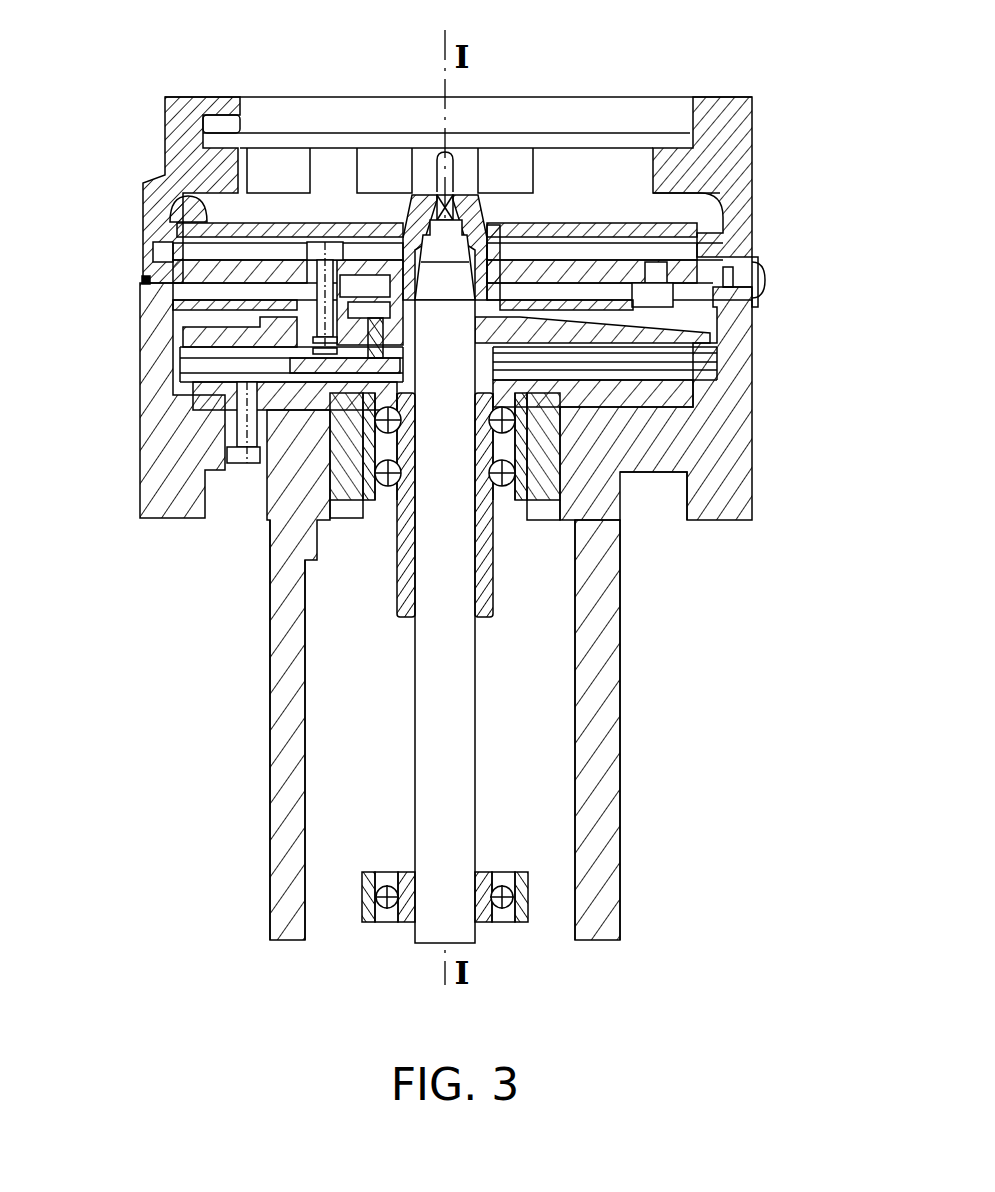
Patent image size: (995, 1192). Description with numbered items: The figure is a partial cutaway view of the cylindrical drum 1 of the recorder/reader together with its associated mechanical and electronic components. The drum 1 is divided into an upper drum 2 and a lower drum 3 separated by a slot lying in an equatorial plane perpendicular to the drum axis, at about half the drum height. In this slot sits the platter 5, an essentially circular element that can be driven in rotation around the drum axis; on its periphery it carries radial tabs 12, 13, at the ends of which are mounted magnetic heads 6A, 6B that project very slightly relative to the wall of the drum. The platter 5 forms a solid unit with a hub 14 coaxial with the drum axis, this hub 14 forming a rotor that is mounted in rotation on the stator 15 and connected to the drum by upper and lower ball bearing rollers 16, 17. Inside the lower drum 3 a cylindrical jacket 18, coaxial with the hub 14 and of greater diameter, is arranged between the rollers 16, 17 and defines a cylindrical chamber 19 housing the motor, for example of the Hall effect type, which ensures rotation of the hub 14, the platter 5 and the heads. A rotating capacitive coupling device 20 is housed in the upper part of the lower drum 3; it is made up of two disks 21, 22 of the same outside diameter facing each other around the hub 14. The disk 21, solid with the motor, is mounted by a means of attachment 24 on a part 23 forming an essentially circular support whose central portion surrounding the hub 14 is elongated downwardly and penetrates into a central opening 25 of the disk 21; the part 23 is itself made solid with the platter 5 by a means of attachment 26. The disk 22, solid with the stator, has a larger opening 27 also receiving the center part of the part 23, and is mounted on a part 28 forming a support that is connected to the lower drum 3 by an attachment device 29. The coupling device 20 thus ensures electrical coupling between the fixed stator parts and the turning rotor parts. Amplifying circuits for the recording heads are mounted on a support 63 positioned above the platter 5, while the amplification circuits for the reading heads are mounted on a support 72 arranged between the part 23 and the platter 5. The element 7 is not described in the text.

The cylindrical drum 1 is at (770, 162).
The upper drum 2 is at (165, 150).
The lower drum 3 is at (140, 482).
The platter 5 is at (737, 240).
The magnetic head 6A is at (142, 279).
The magnetic head 6B is at (752, 301).
The seal 7 is at (758, 283).
The radial tab 12 is at (150, 270).
The radial tab 13 is at (735, 328).
The hub 14 is at (493, 603).
The stator 15 is at (690, 521).
The upper ball bearing roller 16 is at (465, 542).
The lower ball bearing roller 17 is at (530, 902).
The cylindrical jacket 18 is at (620, 803).
The cylindrical chamber 19 is at (545, 757).
The rotating capacitive coupling device 20 is at (58, 348).
The disk 21 is at (183, 360).
The disk 22 is at (190, 372).
The part 23 is at (250, 333).
The means of attachment 24 is at (363, 310).
The central opening 25 is at (502, 318).
The means of attachment 26 is at (327, 262).
The opening 27 is at (517, 376).
The part forming a support 28 is at (193, 393).
The attachment device 29 is at (246, 465).
The support 63 is at (180, 230).
The support 72 is at (207, 290).